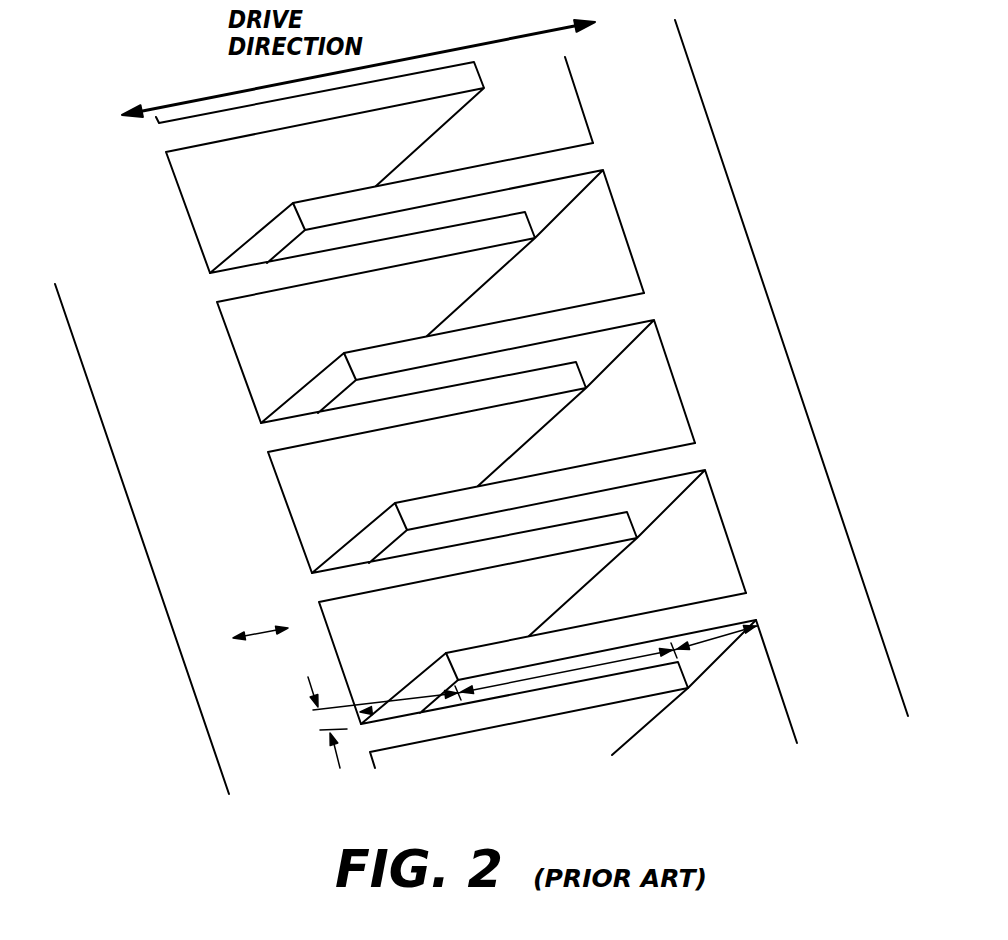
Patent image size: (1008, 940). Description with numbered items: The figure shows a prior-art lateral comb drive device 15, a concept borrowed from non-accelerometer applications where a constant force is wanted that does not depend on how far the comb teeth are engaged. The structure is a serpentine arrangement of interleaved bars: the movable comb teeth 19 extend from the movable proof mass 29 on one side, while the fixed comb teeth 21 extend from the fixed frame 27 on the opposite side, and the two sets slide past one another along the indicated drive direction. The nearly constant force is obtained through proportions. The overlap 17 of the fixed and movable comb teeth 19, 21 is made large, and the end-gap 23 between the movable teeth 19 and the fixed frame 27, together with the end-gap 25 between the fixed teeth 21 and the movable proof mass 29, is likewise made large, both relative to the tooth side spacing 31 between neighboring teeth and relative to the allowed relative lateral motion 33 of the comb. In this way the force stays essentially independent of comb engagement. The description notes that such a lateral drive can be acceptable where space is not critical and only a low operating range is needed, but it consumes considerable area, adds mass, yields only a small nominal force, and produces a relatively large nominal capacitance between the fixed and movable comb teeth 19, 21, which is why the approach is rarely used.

The lateral comb drive device 15 is at (840, 282).
The overlap 17 is at (558, 680).
The movable comb teeth 19 is at (643, 710).
The fixed comb teeth 21 is at (675, 605).
The end-gap 23 is at (713, 645).
The end-gap 25 is at (400, 704).
The fixed frame 27 is at (794, 500).
The movable proof mass 29 is at (243, 554).
The tooth side spacing 31 is at (318, 722).
The allowed relative lateral motion 33 is at (260, 636).